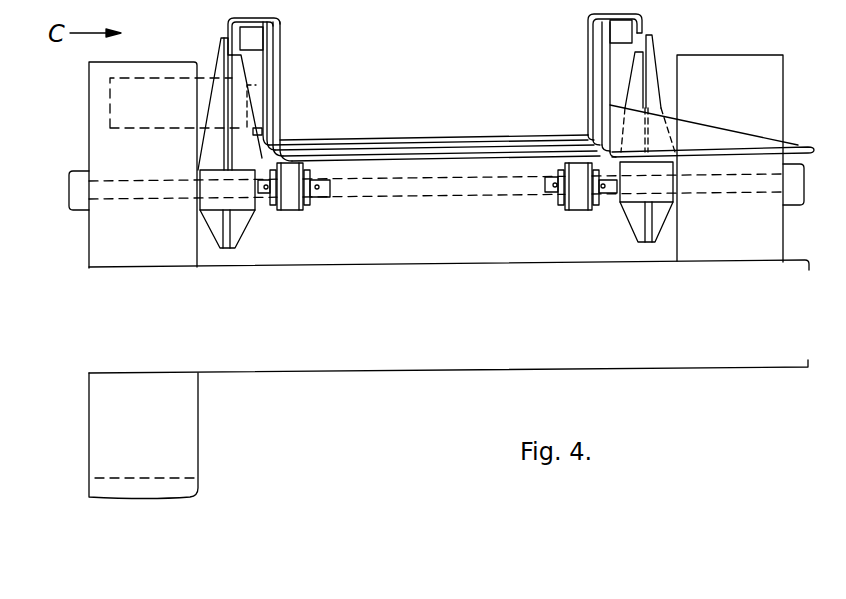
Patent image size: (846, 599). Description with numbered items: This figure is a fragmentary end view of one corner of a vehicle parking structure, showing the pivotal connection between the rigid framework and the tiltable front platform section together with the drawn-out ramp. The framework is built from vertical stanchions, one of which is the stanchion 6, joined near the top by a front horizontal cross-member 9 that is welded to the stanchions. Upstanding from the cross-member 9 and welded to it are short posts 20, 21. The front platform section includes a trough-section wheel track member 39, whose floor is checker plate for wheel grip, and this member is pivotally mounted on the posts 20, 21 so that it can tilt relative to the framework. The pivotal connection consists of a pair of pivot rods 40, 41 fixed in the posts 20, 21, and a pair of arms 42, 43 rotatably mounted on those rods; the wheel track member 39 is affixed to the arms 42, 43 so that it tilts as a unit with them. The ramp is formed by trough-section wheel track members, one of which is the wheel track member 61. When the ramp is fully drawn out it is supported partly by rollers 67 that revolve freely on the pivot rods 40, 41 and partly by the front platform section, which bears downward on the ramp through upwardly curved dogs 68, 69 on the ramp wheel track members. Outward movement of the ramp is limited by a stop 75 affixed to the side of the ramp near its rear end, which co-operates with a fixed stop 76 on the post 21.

The vertical stanchion 6 is at (184, 440).
The front horizontal cross-member 9 is at (320, 363).
The short post 20 is at (760, 234).
The short post 21 is at (98, 228).
The trough-section wheel track member 39 is at (415, 139).
The pivot rod 40 is at (612, 190).
The pivot rod 41 is at (262, 197).
The arm 42 is at (653, 62).
The arm 43 is at (223, 67).
The trough section wheel track member 61 is at (394, 163).
The roller 67 is at (295, 208).
The upwardly curved dog 68 is at (246, 42).
The upwardly curved dog 69 is at (620, 37).
The stop 75 is at (258, 132).
The fixed stop 76 is at (270, 78).